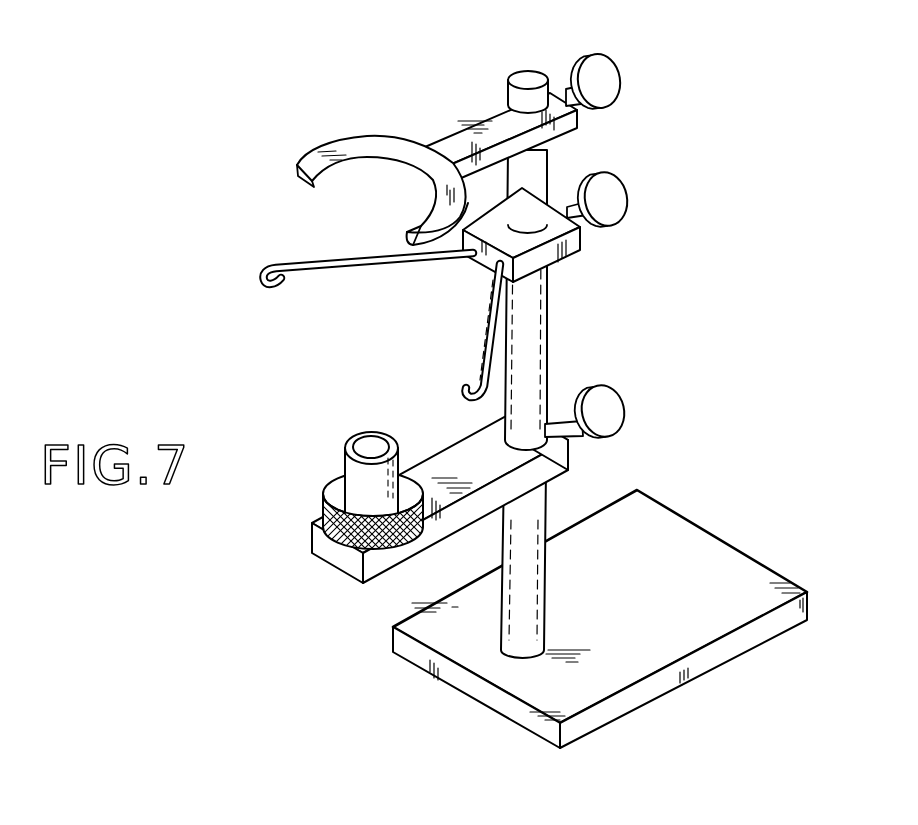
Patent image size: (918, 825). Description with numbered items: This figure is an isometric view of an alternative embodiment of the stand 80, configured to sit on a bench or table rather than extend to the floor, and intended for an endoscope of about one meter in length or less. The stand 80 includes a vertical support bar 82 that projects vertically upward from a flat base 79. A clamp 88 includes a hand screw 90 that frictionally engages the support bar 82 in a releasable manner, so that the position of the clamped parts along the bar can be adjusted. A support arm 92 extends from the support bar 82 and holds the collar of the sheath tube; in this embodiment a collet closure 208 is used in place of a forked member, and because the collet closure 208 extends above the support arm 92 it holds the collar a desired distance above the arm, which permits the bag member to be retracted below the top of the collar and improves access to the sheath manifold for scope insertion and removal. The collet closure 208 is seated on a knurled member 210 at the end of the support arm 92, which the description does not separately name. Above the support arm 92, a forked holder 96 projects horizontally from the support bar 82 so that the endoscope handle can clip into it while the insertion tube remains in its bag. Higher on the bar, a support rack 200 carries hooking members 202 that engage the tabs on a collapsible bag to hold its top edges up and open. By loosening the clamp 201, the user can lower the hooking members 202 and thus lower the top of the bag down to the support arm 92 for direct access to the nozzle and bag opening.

The base 79 is at (697, 567).
The stand 80 is at (664, 318).
The vertical support bar 82 is at (546, 337).
The clamp 88 is at (612, 436).
The hand screw 90 is at (610, 412).
The support arm 92 is at (421, 543).
The forked holder 96 is at (399, 136).
The support rack 200 is at (440, 294).
The clamp 201 is at (614, 215).
The hooking members 202 is at (272, 296).
The collet closure 208 is at (353, 462).
The knurled nut assembly 210 is at (303, 517).